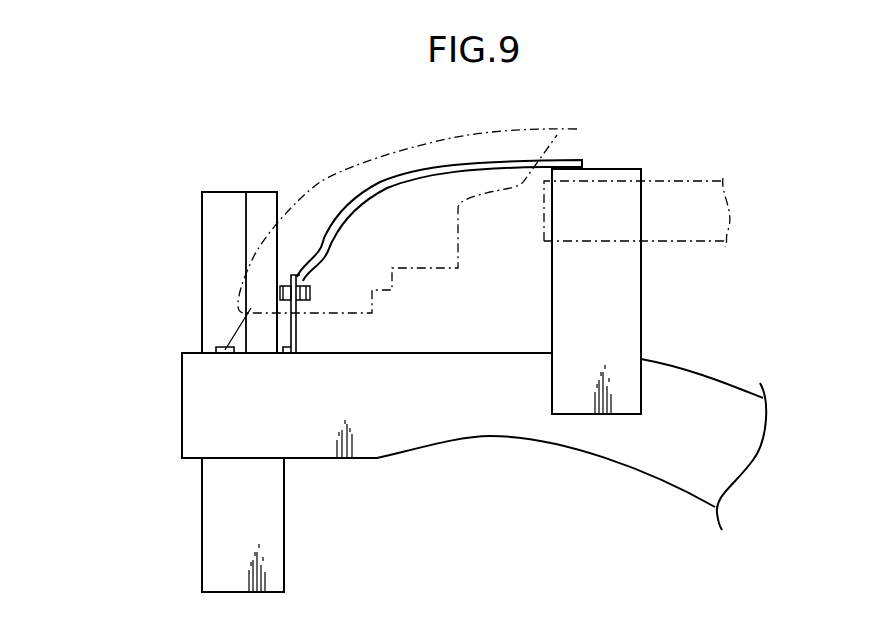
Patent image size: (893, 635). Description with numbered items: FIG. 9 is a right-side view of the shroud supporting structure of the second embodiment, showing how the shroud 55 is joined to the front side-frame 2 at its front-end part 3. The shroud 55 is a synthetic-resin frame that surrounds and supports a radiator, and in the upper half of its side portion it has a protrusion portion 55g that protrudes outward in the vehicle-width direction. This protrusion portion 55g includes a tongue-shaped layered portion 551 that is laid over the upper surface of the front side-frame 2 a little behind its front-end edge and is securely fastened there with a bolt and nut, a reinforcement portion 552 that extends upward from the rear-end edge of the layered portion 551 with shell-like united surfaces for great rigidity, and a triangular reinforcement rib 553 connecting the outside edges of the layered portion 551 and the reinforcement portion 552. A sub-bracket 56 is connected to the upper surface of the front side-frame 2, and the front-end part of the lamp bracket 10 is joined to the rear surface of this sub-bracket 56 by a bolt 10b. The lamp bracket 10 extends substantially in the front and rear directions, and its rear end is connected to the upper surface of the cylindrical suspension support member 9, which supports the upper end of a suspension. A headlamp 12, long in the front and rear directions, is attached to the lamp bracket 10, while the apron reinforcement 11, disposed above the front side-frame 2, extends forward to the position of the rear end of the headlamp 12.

The front side-frame 2 is at (497, 418).
The front-end part 3 is at (187, 378).
The suspension support member 9 is at (630, 312).
The lamp bracket 10 is at (494, 162).
The bolt 10b is at (306, 292).
The apron reinforcement 11 is at (680, 192).
The headlamp 12 is at (421, 140).
The shroud 55 is at (226, 548).
The layered portion 551 is at (225, 352).
The reinforcement portion 552 is at (252, 217).
The reinforcement rib 553 is at (240, 347).
The protrusion portion 55g is at (260, 188).
The sub-bracket 56 is at (297, 340).